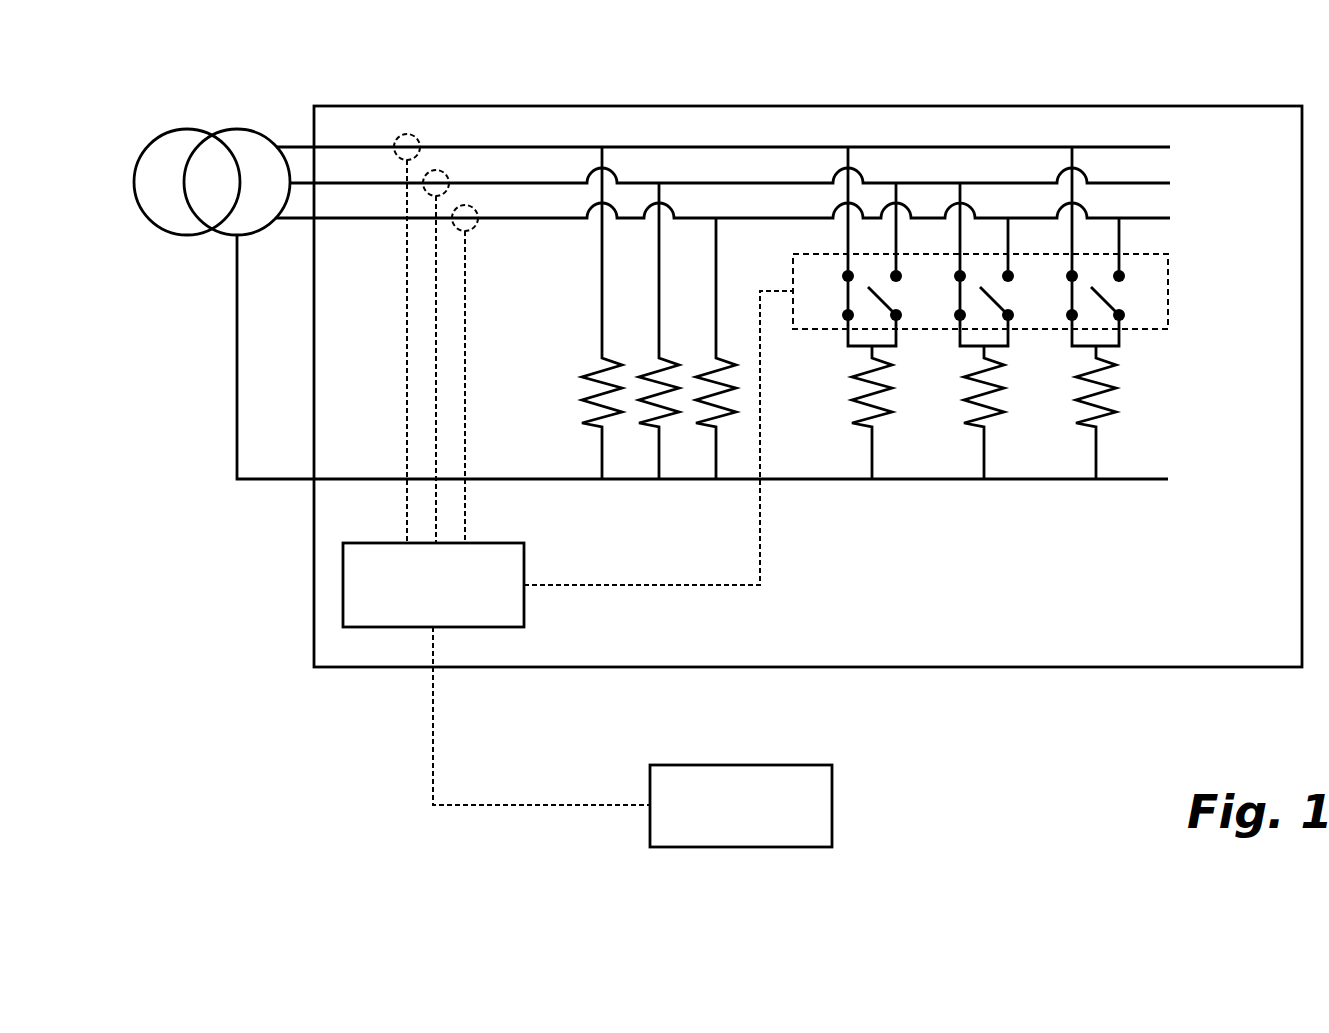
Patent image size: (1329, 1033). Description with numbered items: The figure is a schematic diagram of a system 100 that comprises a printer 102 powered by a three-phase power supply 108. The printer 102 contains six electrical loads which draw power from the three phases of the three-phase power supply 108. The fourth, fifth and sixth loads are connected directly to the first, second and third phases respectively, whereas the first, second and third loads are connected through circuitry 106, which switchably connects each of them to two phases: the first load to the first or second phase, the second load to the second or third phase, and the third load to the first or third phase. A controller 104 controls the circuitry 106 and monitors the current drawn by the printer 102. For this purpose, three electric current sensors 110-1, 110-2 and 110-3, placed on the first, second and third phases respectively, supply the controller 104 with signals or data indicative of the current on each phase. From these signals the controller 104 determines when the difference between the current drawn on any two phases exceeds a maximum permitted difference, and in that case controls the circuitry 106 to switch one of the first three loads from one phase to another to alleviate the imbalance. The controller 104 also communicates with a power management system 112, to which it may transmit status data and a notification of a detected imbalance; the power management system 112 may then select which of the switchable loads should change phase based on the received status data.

The system 100 is at (250, 732).
The printer 102 is at (886, 105).
The controller 104 is at (568, 548).
The circuitry 106 is at (1168, 291).
The three-phase power supply 108 is at (212, 133).
The electric current sensor 110-1 is at (418, 138).
The electric current sensor 110-2 is at (447, 174).
The electric current sensor 110-3 is at (476, 210).
The power management system 112 is at (741, 806).